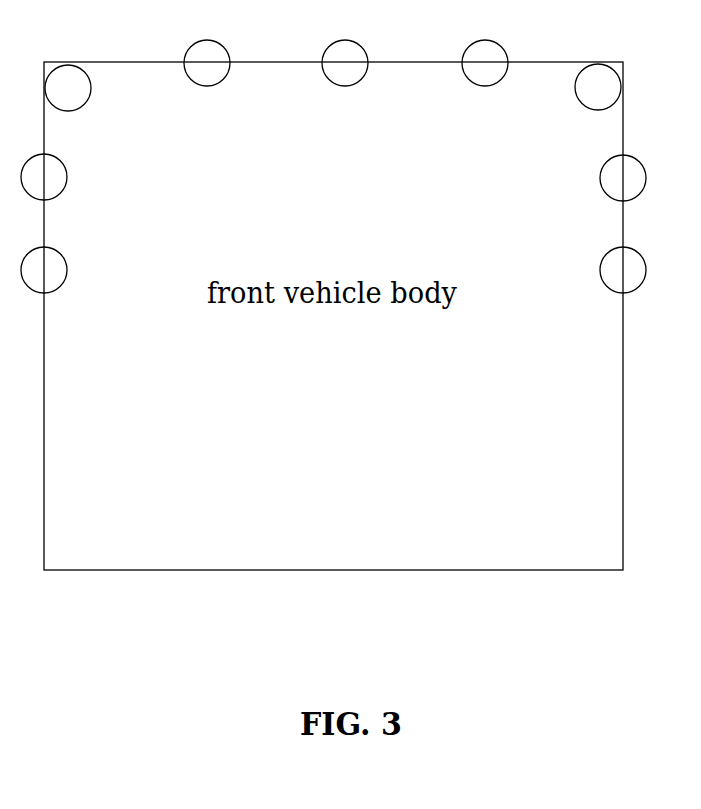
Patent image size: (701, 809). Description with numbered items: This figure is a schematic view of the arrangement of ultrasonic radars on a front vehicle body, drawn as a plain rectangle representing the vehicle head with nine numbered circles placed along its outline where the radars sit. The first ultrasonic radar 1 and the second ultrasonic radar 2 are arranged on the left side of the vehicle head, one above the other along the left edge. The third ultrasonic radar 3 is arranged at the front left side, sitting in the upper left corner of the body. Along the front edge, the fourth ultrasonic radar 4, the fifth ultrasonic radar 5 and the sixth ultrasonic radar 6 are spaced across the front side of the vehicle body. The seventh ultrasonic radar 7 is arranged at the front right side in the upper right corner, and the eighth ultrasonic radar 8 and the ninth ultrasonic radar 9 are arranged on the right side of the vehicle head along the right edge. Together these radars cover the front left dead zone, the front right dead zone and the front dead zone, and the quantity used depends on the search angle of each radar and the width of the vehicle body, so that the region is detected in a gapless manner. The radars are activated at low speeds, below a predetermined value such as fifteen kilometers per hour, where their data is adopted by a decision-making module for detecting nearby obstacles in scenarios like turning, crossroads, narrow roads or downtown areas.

The first ultrasonic radar 1 is at (44, 269).
The second ultrasonic radar 2 is at (44, 176).
The third ultrasonic radar 3 is at (68, 87).
The fourth ultrasonic radar 4 is at (207, 62).
The fifth ultrasonic radar 5 is at (345, 62).
The sixth ultrasonic radar 6 is at (485, 62).
The seventh ultrasonic radar 7 is at (598, 86).
The eighth ultrasonic radar 8 is at (623, 177).
The ninth ultrasonic radar 9 is at (623, 269).